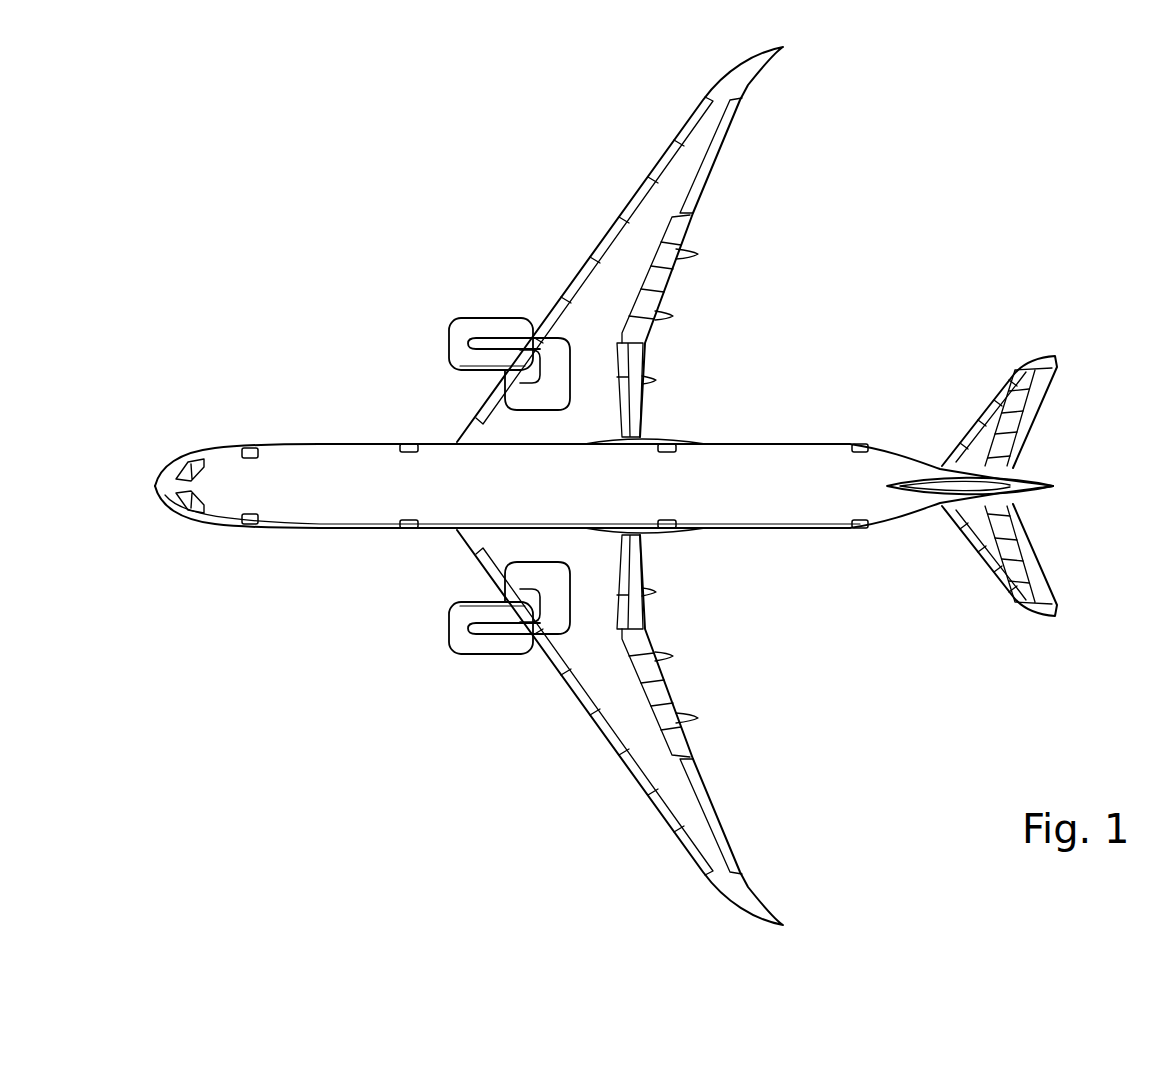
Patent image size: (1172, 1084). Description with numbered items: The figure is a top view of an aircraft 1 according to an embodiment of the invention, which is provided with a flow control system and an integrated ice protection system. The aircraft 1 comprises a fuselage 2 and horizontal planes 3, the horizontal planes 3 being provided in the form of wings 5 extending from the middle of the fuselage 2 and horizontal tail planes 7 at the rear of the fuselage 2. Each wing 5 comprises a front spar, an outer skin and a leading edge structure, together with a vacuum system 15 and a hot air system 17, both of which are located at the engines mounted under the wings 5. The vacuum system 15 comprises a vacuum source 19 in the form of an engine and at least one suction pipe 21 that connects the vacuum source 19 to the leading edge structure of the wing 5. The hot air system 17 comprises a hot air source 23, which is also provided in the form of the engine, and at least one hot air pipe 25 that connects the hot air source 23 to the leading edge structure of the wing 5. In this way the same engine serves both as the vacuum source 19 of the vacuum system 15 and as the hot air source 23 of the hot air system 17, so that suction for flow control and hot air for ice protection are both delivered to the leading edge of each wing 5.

The aircraft 1 is at (256, 210).
The fuselage 2 is at (554, 497).
The horizontal planes 3 is at (805, 486).
The wing 5 is at (622, 258).
The horizontal tail plane 7 is at (1020, 570).
The vacuum system 15 is at (569, 483).
The hot air system 17 is at (569, 483).
The vacuum source 19 is at (480, 483).
The suction pipe 21 is at (570, 363).
The hot air source 23 is at (487, 325).
The hot air pipe 25 is at (523, 392).